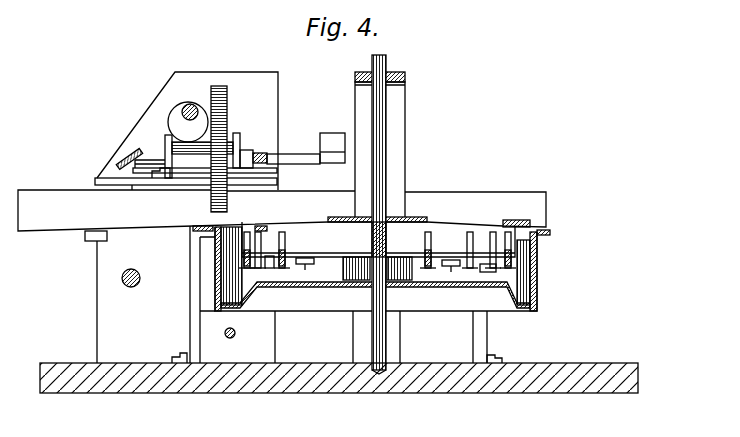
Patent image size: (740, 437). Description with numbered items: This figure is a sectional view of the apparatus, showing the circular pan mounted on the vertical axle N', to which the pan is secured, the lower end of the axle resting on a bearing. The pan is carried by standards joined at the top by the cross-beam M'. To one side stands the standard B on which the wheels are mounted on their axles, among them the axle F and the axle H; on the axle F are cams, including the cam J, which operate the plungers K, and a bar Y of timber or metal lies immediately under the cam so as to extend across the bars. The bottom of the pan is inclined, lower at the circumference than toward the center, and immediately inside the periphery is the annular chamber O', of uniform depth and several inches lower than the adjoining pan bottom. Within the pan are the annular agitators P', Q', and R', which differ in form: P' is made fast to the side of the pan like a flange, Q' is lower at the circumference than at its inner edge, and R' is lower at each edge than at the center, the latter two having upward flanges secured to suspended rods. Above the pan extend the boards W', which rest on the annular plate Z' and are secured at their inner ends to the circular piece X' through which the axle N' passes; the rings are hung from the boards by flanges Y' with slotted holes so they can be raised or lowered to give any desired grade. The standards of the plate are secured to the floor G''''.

The standard B is at (220, 142).
The axle F is at (186, 102).
The cam J is at (188, 122).
The plunger K is at (380, 149).
The cross-beam M' is at (390, 79).
The vertical axle N' is at (391, 211).
The piece of metal or timber X' is at (377, 211).
The flange Y' is at (385, 224).
The annular plate Z' is at (378, 226).
The board W' is at (409, 233).
The bar Y is at (377, 247).
The annular agitator Q' is at (379, 256).
The annular agitator R' is at (378, 256).
The annular agitator P' is at (378, 266).
The annular chamber O' is at (379, 269).
The pin G' is at (139, 278).
The axle H is at (236, 335).
The floor G'''' is at (339, 392).